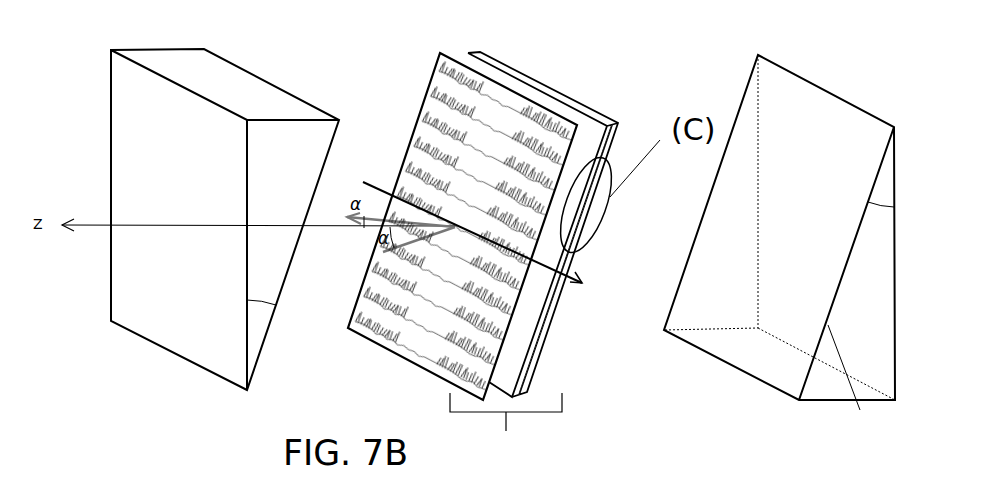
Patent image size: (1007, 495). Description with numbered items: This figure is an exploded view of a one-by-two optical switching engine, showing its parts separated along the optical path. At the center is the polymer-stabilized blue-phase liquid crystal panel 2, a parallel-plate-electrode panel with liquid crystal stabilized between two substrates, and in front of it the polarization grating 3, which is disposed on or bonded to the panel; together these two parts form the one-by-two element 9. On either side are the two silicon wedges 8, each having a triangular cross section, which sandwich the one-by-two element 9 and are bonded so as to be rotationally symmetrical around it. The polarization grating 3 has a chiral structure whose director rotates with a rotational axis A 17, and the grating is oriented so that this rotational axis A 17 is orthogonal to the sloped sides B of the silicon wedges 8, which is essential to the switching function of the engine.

The polymer-stabilized blue-phase liquid crystal panel 2 is at (542, 75).
The polarization grating 3 is at (420, 113).
The silicon wedge 8 is at (127, 165).
The 1×2 element 9 is at (506, 431).
The rotational axis A 17 is at (583, 292).